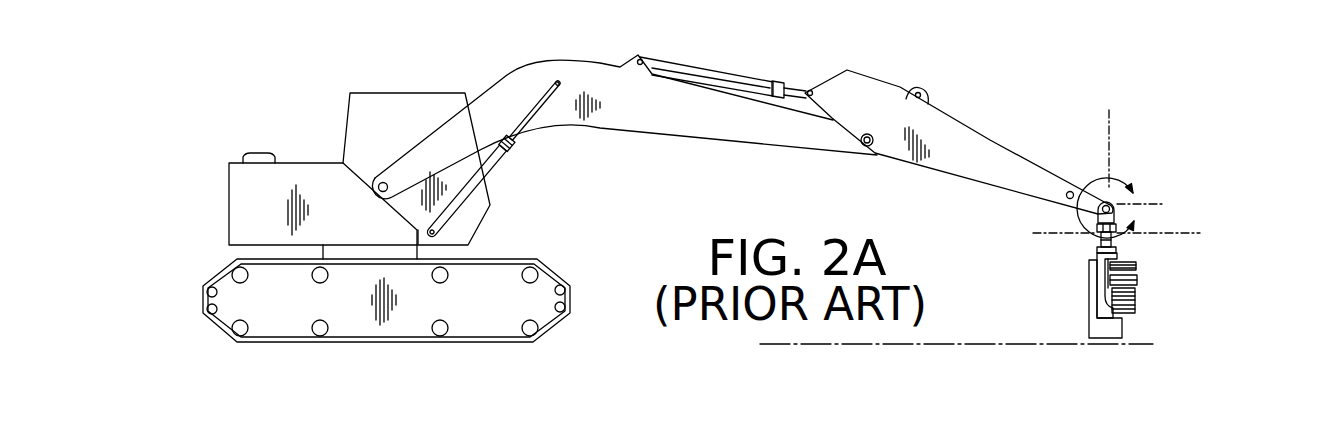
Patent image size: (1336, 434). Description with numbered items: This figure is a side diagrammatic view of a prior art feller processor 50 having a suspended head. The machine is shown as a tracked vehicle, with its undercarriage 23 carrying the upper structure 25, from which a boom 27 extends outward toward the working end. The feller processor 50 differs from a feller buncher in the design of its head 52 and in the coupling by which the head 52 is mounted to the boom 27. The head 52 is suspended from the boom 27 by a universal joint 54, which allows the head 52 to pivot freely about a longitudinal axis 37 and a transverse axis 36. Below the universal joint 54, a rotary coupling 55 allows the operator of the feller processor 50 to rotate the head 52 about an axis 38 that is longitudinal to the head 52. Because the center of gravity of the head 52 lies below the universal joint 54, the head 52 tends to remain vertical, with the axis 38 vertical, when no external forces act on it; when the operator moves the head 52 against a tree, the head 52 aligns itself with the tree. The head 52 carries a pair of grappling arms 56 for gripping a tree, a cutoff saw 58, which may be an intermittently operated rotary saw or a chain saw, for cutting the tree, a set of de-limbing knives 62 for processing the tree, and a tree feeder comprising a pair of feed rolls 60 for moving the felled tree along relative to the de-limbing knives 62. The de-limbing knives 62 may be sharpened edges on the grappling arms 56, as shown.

The undercarriage track 23 is at (543, 266).
The excavator 25 is at (436, 78).
The boom 27 is at (958, 98).
The transverse axis 36 is at (1140, 204).
The longitudinal axis 37 is at (1062, 236).
The axis 38 is at (1114, 120).
The feller processor 50 is at (732, 64).
The head 52 is at (1056, 280).
The universal joint 54 is at (1100, 219).
The rotary coupling 55 is at (1117, 248).
The grappling arms 56 is at (1137, 270).
The cutoff saw 58 is at (1092, 322).
The feed rolls 60 is at (1133, 298).
The de-limbing knives 62 is at (1130, 264).